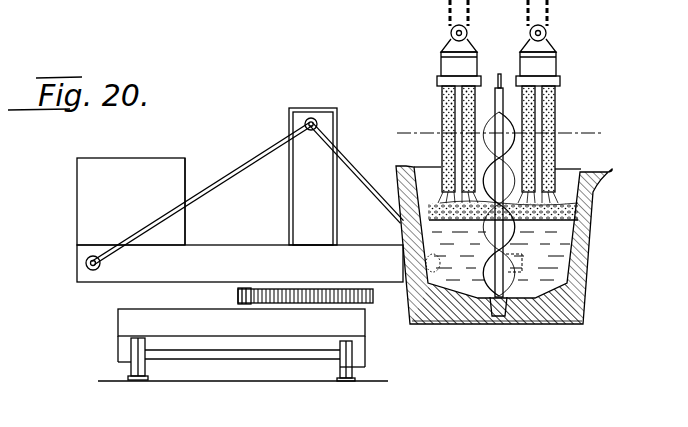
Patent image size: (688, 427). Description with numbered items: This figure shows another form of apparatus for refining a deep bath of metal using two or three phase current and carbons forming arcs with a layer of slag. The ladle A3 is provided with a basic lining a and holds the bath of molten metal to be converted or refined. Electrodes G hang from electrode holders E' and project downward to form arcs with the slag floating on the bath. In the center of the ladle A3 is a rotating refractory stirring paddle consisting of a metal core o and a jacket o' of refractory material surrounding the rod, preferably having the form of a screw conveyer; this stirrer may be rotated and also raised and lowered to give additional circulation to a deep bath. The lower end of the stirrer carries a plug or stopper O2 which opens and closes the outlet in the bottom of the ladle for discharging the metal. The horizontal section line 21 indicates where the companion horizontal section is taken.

The section line 21- 21 is at (501, 135).
The electrode holder E' is at (496, 53).
The electrode G is at (447, 122).
The metal core o is at (497, 177).
The refractory jacket o' is at (500, 204).
The plug or stopper O2 is at (498, 316).
The ladle A3 is at (510, 245).
The basic lining a is at (563, 298).